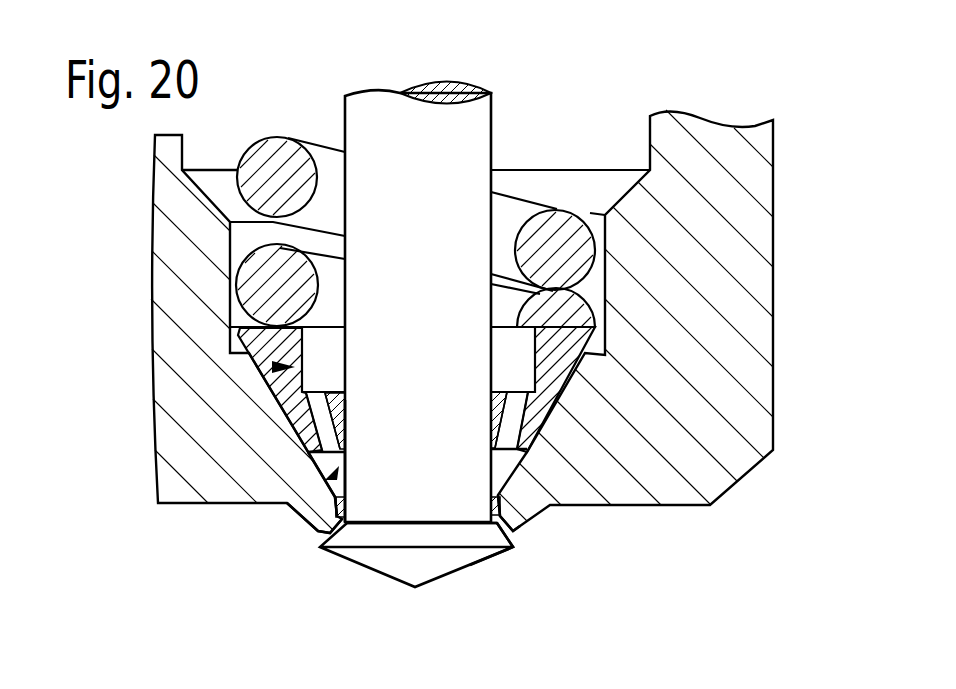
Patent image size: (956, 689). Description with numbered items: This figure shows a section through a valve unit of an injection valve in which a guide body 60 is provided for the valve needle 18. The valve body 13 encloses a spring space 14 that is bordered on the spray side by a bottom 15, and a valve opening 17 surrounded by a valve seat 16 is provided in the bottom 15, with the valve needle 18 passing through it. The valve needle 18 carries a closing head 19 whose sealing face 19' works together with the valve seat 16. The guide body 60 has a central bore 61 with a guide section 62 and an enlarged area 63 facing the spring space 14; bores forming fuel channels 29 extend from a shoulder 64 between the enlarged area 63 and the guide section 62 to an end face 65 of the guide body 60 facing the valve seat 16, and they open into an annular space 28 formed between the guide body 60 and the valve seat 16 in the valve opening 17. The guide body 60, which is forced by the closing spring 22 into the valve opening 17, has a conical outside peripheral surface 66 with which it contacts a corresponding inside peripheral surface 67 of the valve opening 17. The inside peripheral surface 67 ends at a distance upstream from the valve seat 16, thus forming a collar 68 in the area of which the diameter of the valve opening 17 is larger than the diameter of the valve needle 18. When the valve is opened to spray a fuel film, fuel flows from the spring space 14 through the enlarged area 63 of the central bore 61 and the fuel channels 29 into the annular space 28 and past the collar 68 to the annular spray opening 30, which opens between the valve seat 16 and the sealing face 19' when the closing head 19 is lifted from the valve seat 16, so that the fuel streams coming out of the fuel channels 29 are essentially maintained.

The valve body 13 is at (688, 167).
The spring space 14 is at (577, 178).
The bottom 15 is at (240, 410).
The valve seat 16 is at (508, 550).
The valve opening 17 is at (324, 518).
The valve needle 18 is at (457, 180).
The closing head 19 is at (416, 585).
The sealing face 19' is at (446, 592).
The closing spring 22 is at (277, 172).
The annular space 28 is at (498, 507).
The fuel channels 29 is at (325, 478).
The annular spray opening 30 is at (323, 548).
The guide body 60 is at (523, 460).
The central bore 61 is at (330, 418).
The guide section 62 is at (347, 428).
The enlarged area 63 is at (330, 352).
The shoulder 64 is at (272, 367).
The end face 65 is at (520, 464).
The conical outside peripheral surface 66 is at (303, 393).
The inside peripheral surface 67 is at (510, 478).
The collar 68 is at (340, 505).